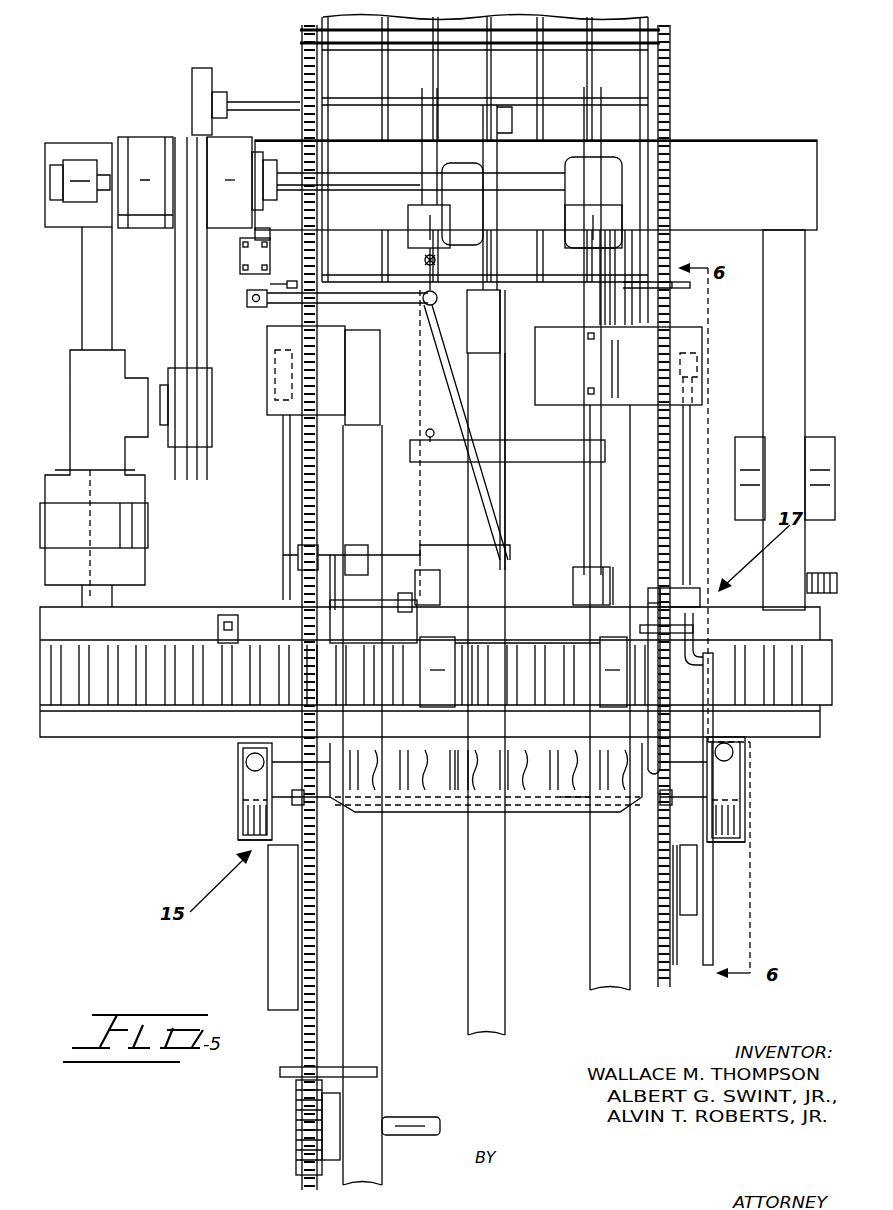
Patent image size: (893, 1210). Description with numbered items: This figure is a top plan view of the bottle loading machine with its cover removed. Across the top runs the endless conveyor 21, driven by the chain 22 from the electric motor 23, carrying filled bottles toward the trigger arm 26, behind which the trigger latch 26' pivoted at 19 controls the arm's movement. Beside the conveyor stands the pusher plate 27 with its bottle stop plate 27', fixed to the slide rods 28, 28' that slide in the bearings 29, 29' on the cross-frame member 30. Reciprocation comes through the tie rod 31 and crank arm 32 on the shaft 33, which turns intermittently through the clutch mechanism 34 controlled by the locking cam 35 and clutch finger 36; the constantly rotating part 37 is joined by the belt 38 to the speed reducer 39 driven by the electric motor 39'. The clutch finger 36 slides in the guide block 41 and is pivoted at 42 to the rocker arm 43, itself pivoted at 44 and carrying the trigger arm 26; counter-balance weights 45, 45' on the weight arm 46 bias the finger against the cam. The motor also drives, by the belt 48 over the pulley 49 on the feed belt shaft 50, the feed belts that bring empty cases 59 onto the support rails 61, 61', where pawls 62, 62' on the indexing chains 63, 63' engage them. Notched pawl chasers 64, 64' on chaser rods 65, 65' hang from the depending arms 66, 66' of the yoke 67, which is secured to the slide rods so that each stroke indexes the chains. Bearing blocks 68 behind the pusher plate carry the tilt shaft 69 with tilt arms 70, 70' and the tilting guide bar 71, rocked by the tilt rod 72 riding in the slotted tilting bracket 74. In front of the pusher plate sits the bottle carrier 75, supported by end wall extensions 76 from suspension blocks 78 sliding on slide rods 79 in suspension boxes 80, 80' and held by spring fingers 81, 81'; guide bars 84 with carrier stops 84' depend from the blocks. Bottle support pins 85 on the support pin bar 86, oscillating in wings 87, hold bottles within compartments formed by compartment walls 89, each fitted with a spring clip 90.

The pivot 19 is at (690, 590).
The endless conveyor 21 is at (160, 655).
The chain 22 is at (825, 575).
The electric motor 23 is at (760, 440).
The trigger arm 26 is at (586, 654).
The trigger latch 26' is at (705, 688).
The pusher plate 27 is at (373, 621).
The bottle stop plate 27' is at (352, 582).
The slide rod 28 is at (427, 426).
The slide rod 28' is at (565, 331).
The bearing 29 is at (428, 168).
The bearing 29' is at (623, 202).
The cross-frame member 30 is at (730, 140).
The tie rod 31 is at (545, 462).
The crank arm 32 is at (440, 298).
The shaft 33 is at (372, 190).
The clutch mechanism 34 is at (219, 100).
The locking cam 35 is at (228, 140).
The clutch finger 36 is at (263, 228).
The constantly rotating part 37 is at (150, 137).
The belt 38 is at (176, 290).
The speed reducer 39 is at (102, 375).
The electric motor 39' is at (121, 525).
The guide block 41 is at (243, 262).
The pivotal connection 42 is at (255, 310).
The rocker arm 43 is at (452, 380).
The pivot 44 is at (486, 430).
The counter-balance weight 45 is at (322, 535).
The counter-balance weight 45' is at (367, 536).
The weight arm 46 is at (400, 555).
The belt 48 is at (192, 308).
The pulley 49 is at (193, 78).
The feed belt shaft 50 is at (263, 104).
The empty case 59 is at (660, 55).
The carton-case support rail 61 is at (596, 610).
The carton-case support rail 61' is at (370, 805).
The pawl 62 is at (681, 295).
The pawl 62' is at (294, 678).
The indexing chain 63 is at (697, 506).
The indexing chain 63' is at (273, 607).
The pawl chaser 64 is at (708, 880).
The pawl chaser 64' is at (268, 927).
The chaser rod 65 is at (707, 495).
The chaser rod 65' is at (268, 507).
The depending arm 66 is at (715, 365).
The depending arm 66' is at (259, 372).
The yoke 67 is at (335, 352).
The bearing block 68 is at (405, 600).
The tilt shaft 69 is at (678, 610).
The tilt arm 70 is at (418, 686).
The tilt arm 70' is at (602, 685).
The tilting guide bar 71 is at (520, 712).
The tilt rod 72 is at (690, 640).
The tilting bracket 74 is at (713, 720).
The bottle carrier 75 is at (385, 815).
The end wall extension 76 is at (246, 783).
The suspension block 78 is at (250, 793).
The slide rod 79 is at (240, 830).
The suspension box 80 is at (750, 848).
The suspension box 80' is at (233, 855).
The spring finger 81 is at (750, 750).
The spring finger 81' is at (238, 743).
The guide bar 84 is at (753, 820).
The bottle carrier stop 84' is at (233, 821).
The bottle support pin 85 is at (575, 805).
The support pin bar 86 is at (445, 815).
The wing 87 is at (300, 805).
The compartment wall 89 is at (470, 750).
The spring clip 90 is at (350, 750).